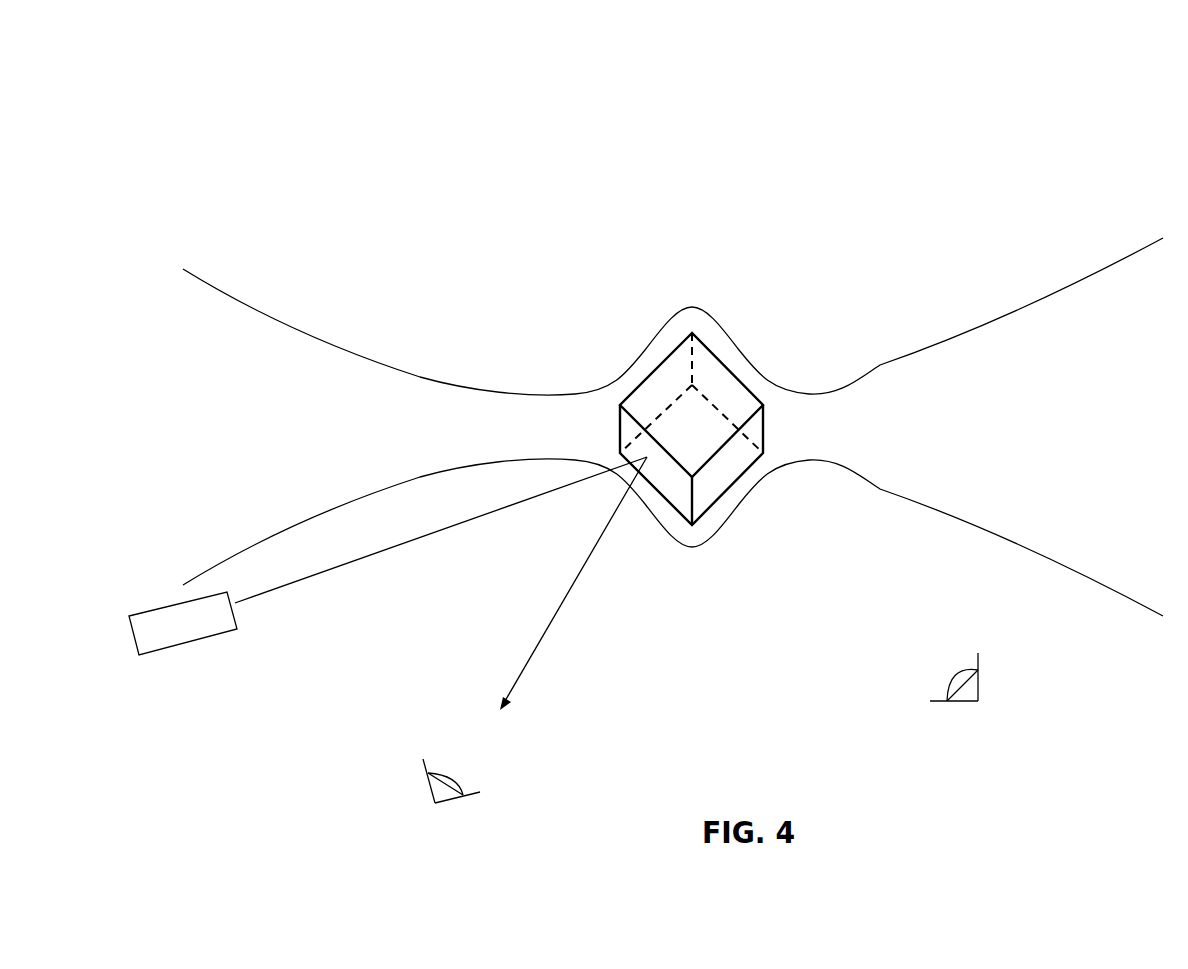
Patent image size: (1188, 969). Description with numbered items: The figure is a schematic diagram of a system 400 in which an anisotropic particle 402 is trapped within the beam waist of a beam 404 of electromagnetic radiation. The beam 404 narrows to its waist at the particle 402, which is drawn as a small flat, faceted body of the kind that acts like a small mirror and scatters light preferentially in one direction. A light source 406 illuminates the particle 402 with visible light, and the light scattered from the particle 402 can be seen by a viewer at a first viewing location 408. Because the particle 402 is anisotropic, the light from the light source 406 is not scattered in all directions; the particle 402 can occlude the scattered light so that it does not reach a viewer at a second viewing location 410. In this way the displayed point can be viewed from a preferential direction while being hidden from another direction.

The system 400 is at (388, 165).
The anisotropic particle 402 is at (650, 365).
The beam of electromagnetic radiation 404 is at (338, 348).
The light source 406 is at (388, 583).
The first viewing location 408 is at (433, 802).
The second viewing location 410 is at (978, 683).